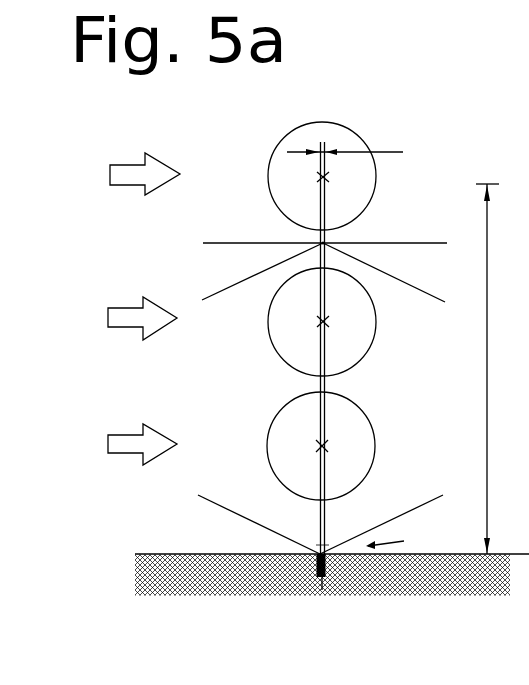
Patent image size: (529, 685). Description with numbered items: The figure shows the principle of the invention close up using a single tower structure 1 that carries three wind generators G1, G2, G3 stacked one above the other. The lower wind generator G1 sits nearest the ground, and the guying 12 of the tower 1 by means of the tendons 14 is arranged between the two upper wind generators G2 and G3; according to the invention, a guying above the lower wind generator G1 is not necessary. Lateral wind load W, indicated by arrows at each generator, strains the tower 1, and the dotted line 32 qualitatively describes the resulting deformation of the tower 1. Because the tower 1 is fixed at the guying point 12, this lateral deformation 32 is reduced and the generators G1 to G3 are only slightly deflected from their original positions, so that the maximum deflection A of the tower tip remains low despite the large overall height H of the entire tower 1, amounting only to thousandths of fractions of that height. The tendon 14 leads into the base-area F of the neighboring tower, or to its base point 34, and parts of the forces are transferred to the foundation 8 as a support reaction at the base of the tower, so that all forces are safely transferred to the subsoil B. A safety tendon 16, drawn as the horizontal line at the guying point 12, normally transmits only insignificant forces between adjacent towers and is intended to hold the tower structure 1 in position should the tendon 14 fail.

The tower structure 1 is at (318, 186).
The foundation 8 is at (321, 588).
The guying point 12 is at (336, 241).
The tendon 14 is at (397, 276).
The safety tendon 16 is at (414, 243).
The deformation 32 is at (328, 182).
The base point 34 is at (319, 550).
The subsoil B is at (412, 572).
The deflection A is at (345, 146).
The base-area F is at (390, 541).
The height H is at (484, 369).
The wind load W is at (144, 309).
The lower wind generator G1 is at (248, 420).
The wind generator G2 is at (251, 321).
The wind generator G3 is at (256, 168).